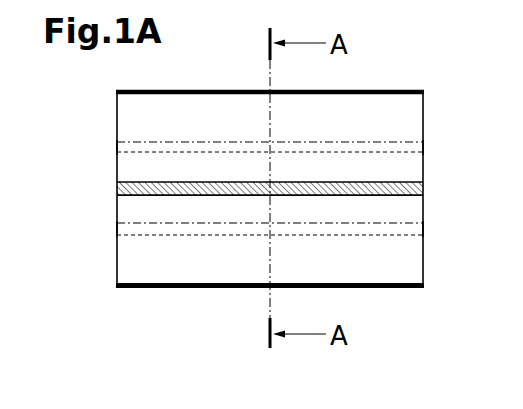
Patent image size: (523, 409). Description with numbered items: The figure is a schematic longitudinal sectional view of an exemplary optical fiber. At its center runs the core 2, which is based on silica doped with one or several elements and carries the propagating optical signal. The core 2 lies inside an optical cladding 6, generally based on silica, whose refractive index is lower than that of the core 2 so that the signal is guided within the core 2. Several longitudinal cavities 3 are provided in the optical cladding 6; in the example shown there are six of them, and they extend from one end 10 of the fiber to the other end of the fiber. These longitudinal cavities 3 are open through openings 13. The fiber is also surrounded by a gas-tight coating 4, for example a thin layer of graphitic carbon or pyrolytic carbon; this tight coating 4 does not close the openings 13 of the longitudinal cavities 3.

The end of the fiber 10 is at (117, 166).
The core 2 is at (117, 189).
The longitudinal cavities 3 is at (220, 143).
The gas-tight coating 4 is at (145, 288).
The optical cladding 6 is at (130, 206).
The openings 13 is at (117, 146).